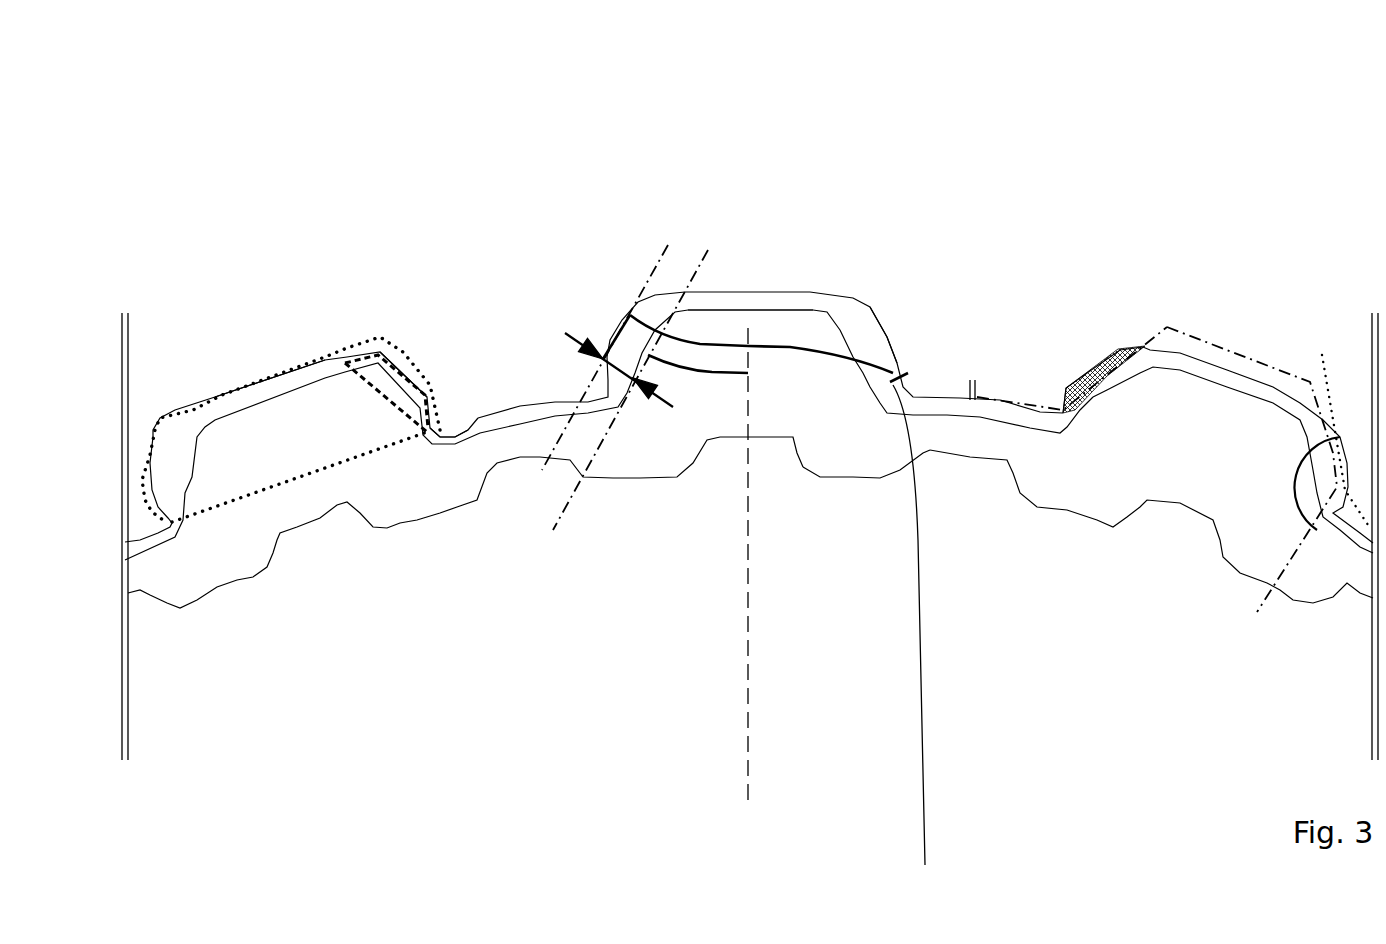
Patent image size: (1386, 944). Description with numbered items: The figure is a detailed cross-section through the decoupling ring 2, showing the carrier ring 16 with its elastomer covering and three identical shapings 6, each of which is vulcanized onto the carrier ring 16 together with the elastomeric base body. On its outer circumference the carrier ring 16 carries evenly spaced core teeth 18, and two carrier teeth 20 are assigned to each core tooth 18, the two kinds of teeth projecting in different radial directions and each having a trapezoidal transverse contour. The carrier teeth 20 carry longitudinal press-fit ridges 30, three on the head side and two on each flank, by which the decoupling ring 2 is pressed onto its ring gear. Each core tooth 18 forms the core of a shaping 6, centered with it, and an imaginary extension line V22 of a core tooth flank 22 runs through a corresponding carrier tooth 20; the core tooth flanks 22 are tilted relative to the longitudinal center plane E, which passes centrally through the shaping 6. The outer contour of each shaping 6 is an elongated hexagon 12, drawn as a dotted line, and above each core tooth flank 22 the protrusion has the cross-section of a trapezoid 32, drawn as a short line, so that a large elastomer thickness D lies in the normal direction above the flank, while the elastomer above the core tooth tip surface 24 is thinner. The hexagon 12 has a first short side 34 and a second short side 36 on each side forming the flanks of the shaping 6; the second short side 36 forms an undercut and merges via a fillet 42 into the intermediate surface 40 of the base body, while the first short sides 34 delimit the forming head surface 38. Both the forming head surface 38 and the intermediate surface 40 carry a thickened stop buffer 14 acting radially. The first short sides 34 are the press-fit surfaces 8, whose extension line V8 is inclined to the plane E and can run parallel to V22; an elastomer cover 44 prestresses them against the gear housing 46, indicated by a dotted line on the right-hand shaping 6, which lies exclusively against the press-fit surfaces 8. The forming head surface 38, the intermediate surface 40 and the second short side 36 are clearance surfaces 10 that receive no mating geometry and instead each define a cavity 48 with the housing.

The decoupling ring 2 is at (338, 535).
The shaping 6 is at (286, 370).
The press-fit surface 8 is at (145, 453).
The clearance surface 10 is at (757, 278).
The elongated hexagon 12 is at (408, 363).
The stop buffer 14 is at (474, 417).
The carrier ring 16 is at (970, 457).
The core tooth 18 is at (837, 320).
The carrier tooth 20 is at (875, 476).
The core tooth flank 22 is at (190, 477).
The core tooth tip surface 24 is at (777, 312).
The press-fit ridge 30 is at (827, 478).
The trapezoid 32 is at (347, 360).
The first short side 34 is at (881, 330).
The second short side 36 is at (917, 643).
The forming head surface 38 is at (256, 382).
The intermediate surface 40 is at (958, 400).
The fillet 42 is at (443, 430).
The elastomer cover 44 is at (1100, 370).
The gear housing 46 is at (1288, 373).
The cavity 48 is at (1025, 400).
The extension line of the press-fit surface V8 is at (655, 270).
The extension line of a core tooth flank V22 is at (703, 262).
The thickness D is at (617, 368).
The longitudinal center plane E is at (748, 589).